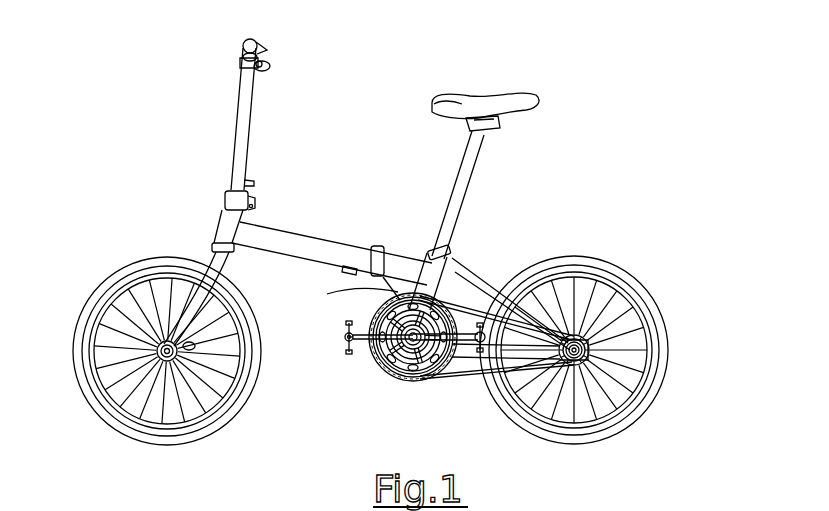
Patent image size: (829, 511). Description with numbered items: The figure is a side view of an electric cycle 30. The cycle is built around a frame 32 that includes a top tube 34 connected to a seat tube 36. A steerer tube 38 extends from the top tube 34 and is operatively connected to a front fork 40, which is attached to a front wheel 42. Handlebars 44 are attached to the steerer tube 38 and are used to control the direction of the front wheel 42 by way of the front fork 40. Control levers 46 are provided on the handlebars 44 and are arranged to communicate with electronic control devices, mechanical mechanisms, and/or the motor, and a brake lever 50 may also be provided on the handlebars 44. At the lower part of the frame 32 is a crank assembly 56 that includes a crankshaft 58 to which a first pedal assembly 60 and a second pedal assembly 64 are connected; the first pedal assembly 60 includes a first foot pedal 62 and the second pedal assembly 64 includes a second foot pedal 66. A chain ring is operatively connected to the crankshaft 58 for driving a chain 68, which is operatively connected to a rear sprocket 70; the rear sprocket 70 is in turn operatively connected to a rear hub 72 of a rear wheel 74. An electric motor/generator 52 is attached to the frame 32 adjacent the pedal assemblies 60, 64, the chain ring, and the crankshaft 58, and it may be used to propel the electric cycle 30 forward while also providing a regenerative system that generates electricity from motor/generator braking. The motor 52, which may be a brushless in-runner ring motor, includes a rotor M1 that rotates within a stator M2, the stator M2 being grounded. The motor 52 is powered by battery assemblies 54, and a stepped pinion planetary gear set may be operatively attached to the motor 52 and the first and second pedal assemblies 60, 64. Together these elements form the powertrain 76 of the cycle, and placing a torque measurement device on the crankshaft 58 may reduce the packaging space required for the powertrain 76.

The electric cycle 30 is at (579, 66).
The frame 32 is at (277, 233).
The top tube 34 is at (345, 250).
The seat tube 36 is at (464, 200).
The steerer tube 38 is at (242, 140).
The front fork 40 is at (212, 273).
The front wheel 42 is at (111, 282).
The handlebars 44 is at (245, 50).
The control levers 46 is at (268, 72).
The brake lever 50 is at (243, 64).
The electric motor/generator 52 is at (434, 392).
The battery assemblies 54 is at (478, 278).
The crank assembly 56 is at (424, 383).
The crankshaft 58 is at (438, 372).
The first pedal assembly 60 is at (361, 340).
The first foot pedal 62 is at (345, 337).
The second pedal assembly 64 is at (448, 360).
The second foot pedal 66 is at (484, 330).
The chain 68 is at (455, 300).
The rear sprocket 70 is at (580, 354).
The rear hub 72 is at (580, 362).
The rear wheel 74 is at (663, 358).
The powertrain 76 is at (353, 359).
The rotor M1 is at (398, 375).
The stator M2 is at (417, 353).